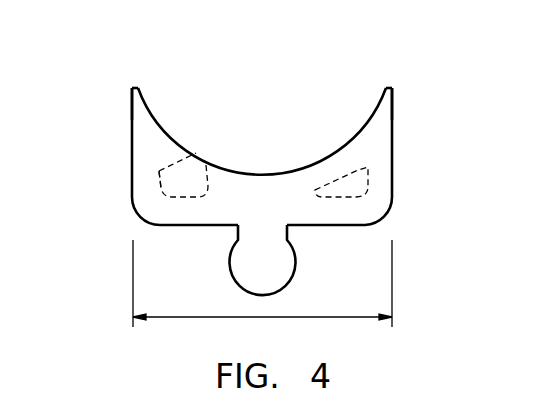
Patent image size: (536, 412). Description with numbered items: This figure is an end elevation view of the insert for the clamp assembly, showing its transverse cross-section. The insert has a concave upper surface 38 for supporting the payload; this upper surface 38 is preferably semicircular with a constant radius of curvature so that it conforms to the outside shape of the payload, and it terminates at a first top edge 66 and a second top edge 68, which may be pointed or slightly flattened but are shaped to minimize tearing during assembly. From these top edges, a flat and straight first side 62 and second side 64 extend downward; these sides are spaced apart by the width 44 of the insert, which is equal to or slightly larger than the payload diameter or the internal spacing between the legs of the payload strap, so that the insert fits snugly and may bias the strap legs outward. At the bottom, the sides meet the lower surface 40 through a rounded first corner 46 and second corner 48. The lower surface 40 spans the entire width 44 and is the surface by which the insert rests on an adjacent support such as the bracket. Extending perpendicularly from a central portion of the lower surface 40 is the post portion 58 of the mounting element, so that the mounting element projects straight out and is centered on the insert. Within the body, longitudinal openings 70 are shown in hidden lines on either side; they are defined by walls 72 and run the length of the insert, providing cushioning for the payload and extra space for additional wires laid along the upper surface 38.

The upper surface 38 is at (153, 119).
The lower surface 40 is at (212, 226).
The width 44 is at (298, 318).
The first corner 46 is at (384, 214).
The second corner 48 is at (136, 212).
The post portion 58 is at (291, 244).
The first side 62 is at (393, 152).
The second side 64 is at (131, 150).
The first top edge 66 is at (390, 88).
The second top edge 68 is at (131, 88).
The openings 70 is at (338, 175).
The walls 72 is at (165, 178).